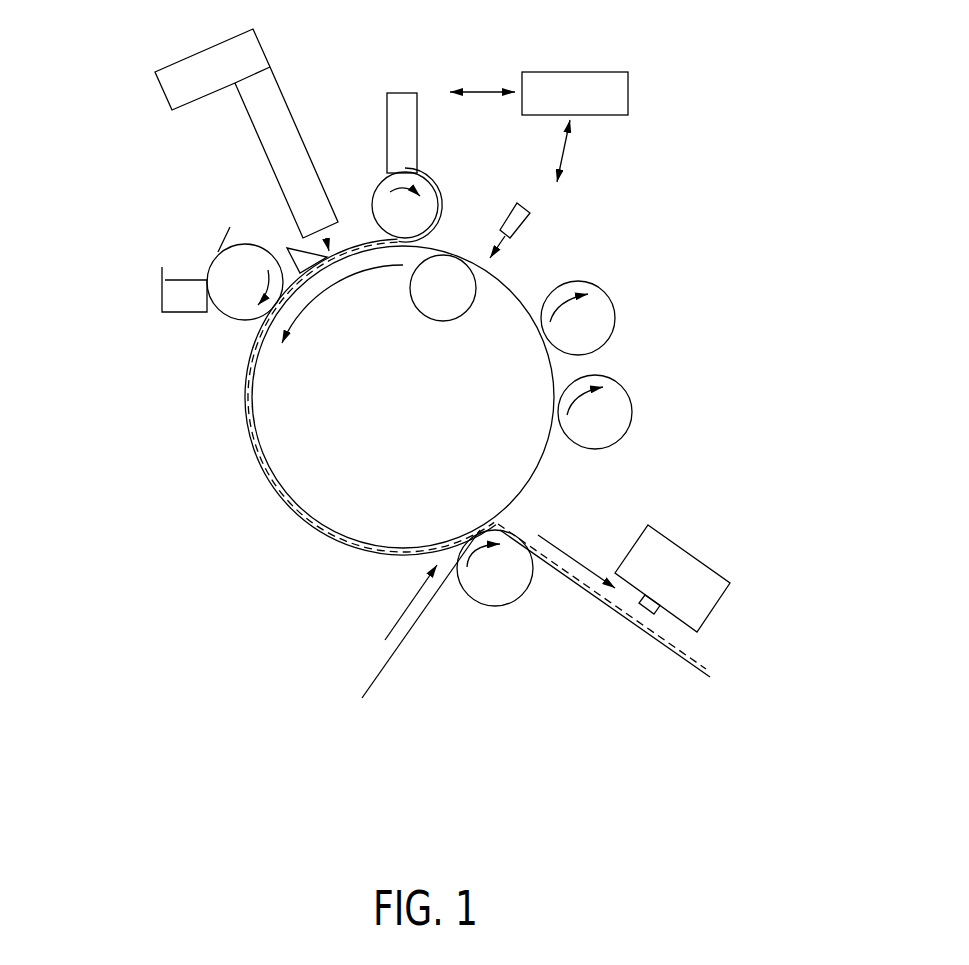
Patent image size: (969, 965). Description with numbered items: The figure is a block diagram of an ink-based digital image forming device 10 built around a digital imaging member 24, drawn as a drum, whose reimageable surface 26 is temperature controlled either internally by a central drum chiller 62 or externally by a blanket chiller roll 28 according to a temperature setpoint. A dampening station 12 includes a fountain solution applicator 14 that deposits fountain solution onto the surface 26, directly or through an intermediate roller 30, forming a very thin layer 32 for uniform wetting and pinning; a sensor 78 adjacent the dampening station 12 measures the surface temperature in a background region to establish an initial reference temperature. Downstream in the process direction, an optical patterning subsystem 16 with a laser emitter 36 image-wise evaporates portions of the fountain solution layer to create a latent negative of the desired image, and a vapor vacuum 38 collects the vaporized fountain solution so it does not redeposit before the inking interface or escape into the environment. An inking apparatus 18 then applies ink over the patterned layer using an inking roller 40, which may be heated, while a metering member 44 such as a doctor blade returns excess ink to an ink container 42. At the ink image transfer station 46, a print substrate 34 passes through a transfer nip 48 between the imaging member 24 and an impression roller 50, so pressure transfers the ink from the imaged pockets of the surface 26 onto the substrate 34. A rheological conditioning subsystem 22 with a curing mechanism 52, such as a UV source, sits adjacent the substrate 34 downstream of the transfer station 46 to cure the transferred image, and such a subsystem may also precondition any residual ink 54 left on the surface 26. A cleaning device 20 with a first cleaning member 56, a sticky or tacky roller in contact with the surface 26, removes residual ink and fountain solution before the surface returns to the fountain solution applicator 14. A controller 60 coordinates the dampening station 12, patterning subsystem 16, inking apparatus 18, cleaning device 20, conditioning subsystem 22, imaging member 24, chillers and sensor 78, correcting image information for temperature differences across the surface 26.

The digital image forming device 10 is at (675, 128).
The dampening station 12 is at (455, 177).
The fountain solution applicator 14 is at (413, 93).
The optical patterning subsystem 16 is at (283, 55).
The inking apparatus 18 is at (137, 252).
The cleaning device 20 is at (663, 370).
The rheological conditioning subsystem 22 is at (690, 555).
The digital imaging member 24 is at (275, 460).
The reimageable surface 26 is at (548, 363).
The blanket chiller roll 28 is at (617, 320).
The roller 30 is at (388, 173).
The thin layer 32 is at (362, 247).
The print substrate 34 is at (385, 663).
The laser emitter 36 is at (283, 90).
The vapor vacuum 38 is at (287, 250).
The inking roller 40 is at (242, 320).
The ink container 42 is at (162, 295).
The metering member 44 is at (223, 242).
The ink image transfer station 46 is at (405, 565).
The transfer nip 48 is at (502, 525).
The impression roller 50 is at (513, 600).
The curing mechanism 52 is at (655, 618).
The residual ink 54 is at (494, 522).
The first cleaning member 56 is at (633, 412).
The controller 60 is at (572, 70).
The central drum chiller 62 is at (415, 305).
The sensor 78 is at (520, 230).